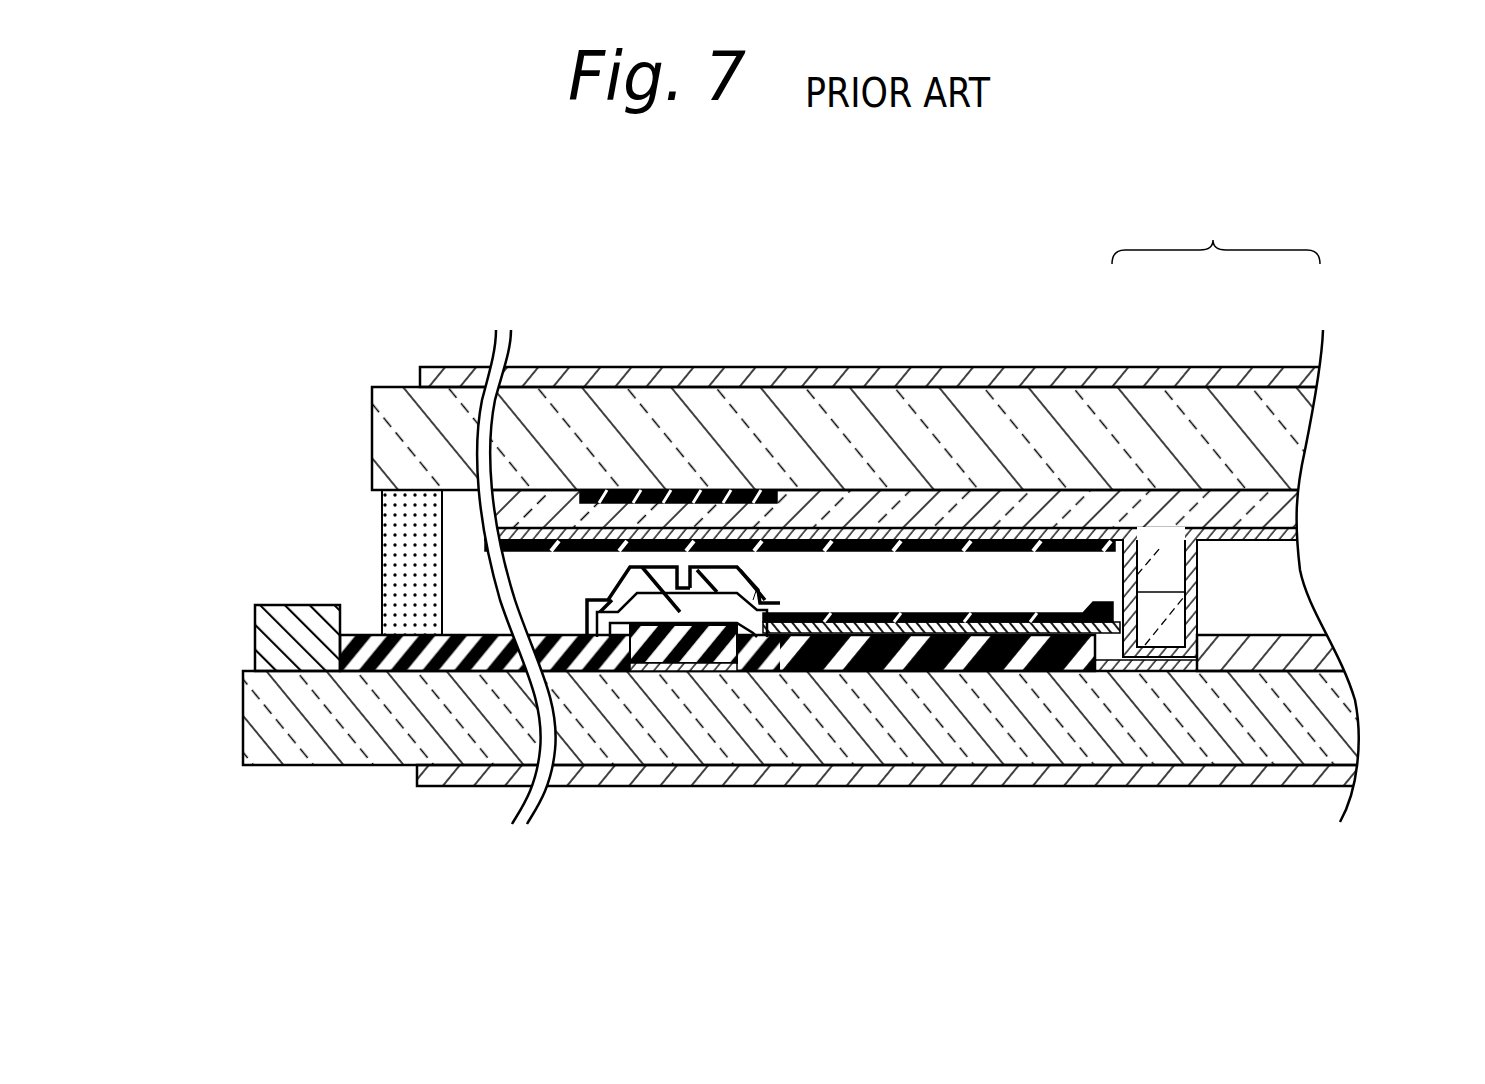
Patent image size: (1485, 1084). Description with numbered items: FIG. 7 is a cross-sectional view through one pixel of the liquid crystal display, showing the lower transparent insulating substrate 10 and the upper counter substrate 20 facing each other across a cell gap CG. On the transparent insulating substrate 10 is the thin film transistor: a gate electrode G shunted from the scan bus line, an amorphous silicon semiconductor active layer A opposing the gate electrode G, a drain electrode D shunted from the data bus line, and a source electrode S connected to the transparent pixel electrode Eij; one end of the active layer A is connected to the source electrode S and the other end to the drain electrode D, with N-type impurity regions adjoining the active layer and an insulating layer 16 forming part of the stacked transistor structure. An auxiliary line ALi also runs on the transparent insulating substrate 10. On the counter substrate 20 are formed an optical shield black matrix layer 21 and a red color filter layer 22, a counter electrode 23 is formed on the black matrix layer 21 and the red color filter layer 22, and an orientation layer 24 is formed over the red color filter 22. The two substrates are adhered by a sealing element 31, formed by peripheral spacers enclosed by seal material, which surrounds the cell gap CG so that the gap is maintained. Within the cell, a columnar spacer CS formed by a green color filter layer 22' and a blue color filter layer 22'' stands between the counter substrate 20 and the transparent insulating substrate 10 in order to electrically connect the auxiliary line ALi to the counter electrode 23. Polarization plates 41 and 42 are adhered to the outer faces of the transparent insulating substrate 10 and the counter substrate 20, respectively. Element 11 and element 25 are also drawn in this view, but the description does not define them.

The transparent insulating substrate 10 is at (308, 748).
The sealing member 11 is at (265, 629).
The insulating layer 16 is at (757, 588).
The counter substrate 20 is at (385, 422).
The optical shield black matrix layer 21 is at (700, 491).
The red color filter layer 22 is at (925, 413).
The green color filter layer 22' is at (1172, 431).
The blue color filter layer 22'' is at (1239, 452).
The counter electrode 23 is at (1033, 535).
The orientation layer 24 is at (1053, 548).
The alignment layer 25 is at (1023, 617).
The sealing element 31 is at (400, 533).
The polarization plate 41 is at (467, 775).
The polarization plate 42 is at (538, 380).
The columnar spacer CS is at (1216, 229).
The cell gap CG is at (530, 588).
The source electrode S is at (594, 637).
The drain electrode D is at (760, 600).
The gate electrode G is at (713, 640).
The semiconductor active layer A is at (752, 640).
The auxiliary line ALi is at (1322, 650).
The transparent pixel electrode Eij is at (1047, 628).